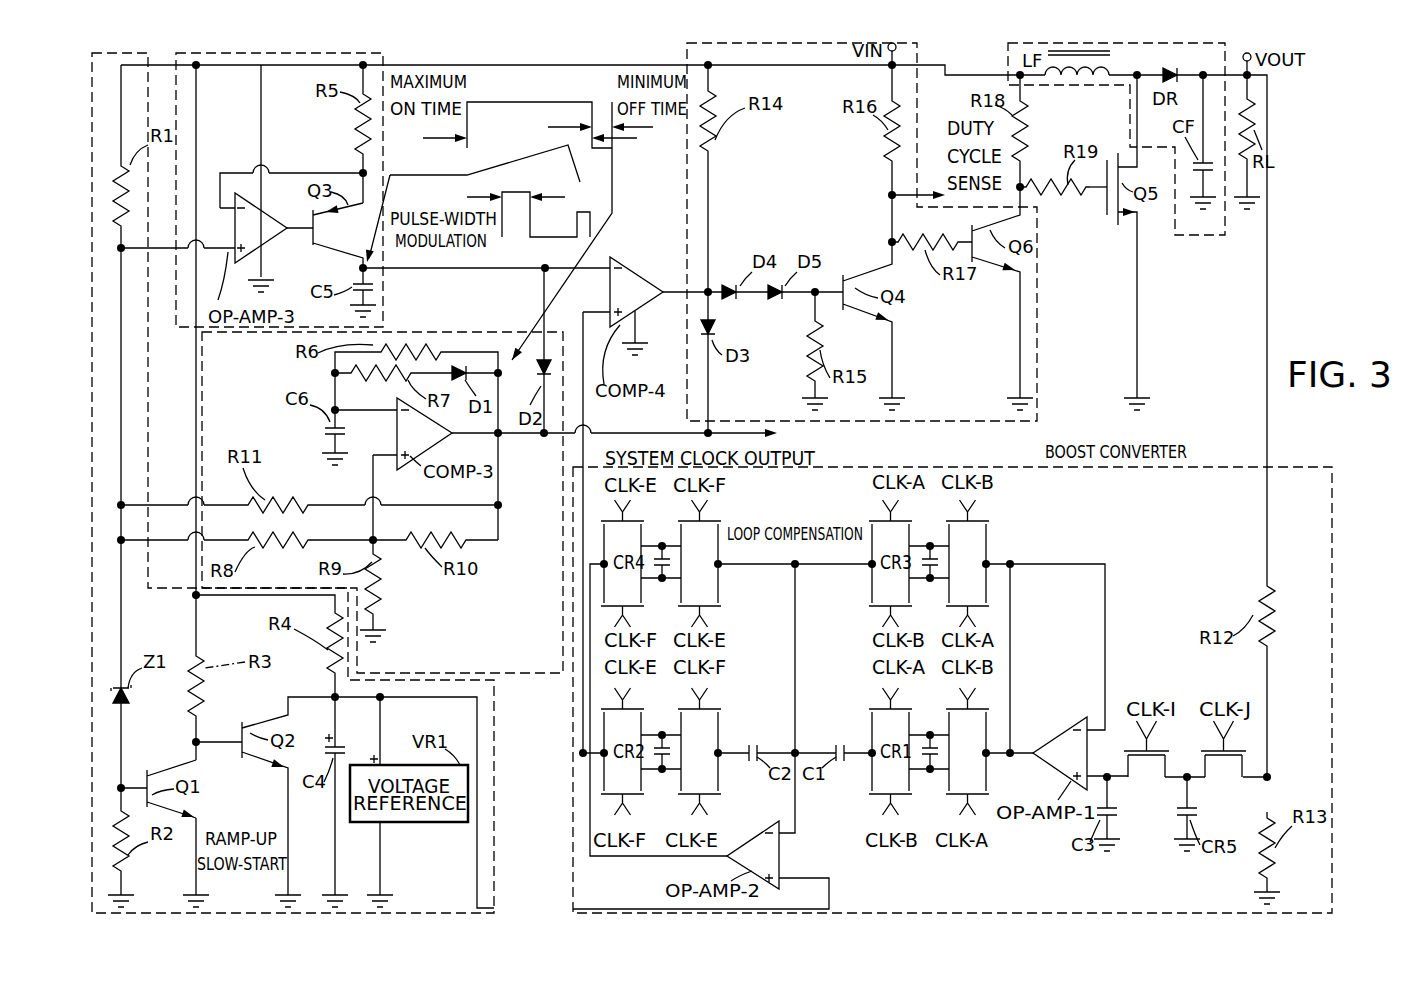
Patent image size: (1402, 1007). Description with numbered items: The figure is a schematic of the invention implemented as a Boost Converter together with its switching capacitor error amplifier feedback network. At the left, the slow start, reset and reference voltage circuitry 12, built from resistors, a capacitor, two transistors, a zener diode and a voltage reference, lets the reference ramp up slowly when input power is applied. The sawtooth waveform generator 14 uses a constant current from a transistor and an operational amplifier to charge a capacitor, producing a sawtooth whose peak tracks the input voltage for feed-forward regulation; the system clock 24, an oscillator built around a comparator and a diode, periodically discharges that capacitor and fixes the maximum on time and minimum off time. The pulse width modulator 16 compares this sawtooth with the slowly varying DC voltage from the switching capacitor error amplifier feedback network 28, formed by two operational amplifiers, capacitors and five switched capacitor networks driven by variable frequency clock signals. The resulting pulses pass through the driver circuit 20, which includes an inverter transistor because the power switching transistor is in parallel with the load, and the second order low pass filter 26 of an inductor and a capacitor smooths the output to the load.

The slow start, reset and reference voltage circuitry 12 is at (496, 878).
The sawtooth waveform generator 14 is at (182, 330).
The pulse width modulator 16 is at (692, 279).
The Boost driver circuit 20 is at (1038, 296).
The system clock 24 is at (545, 676).
The second order low pass filter 26 is at (1207, 237).
The switching capacitor error amplifier feedback network 28 is at (1290, 468).